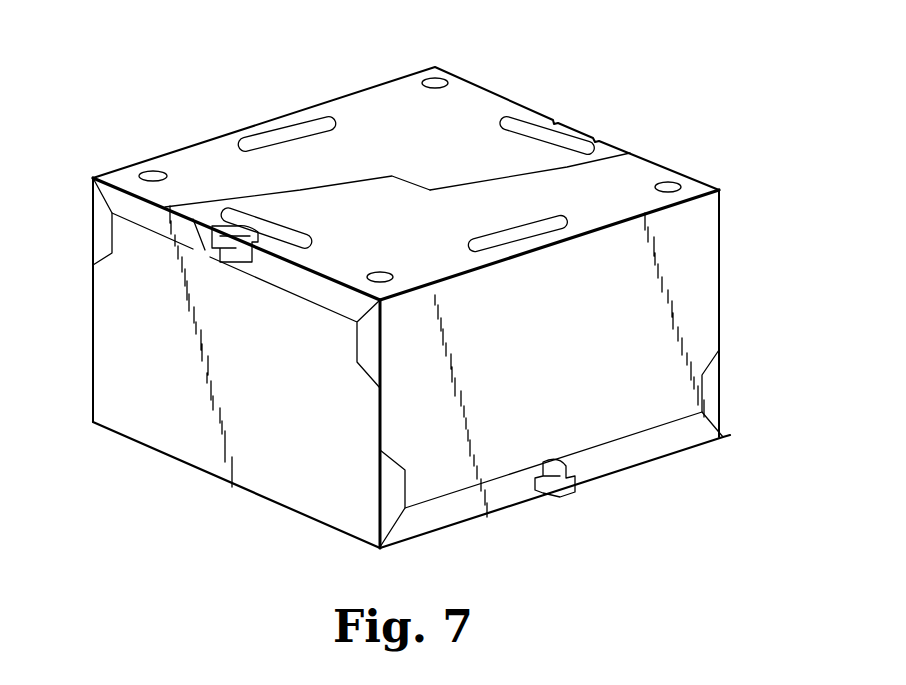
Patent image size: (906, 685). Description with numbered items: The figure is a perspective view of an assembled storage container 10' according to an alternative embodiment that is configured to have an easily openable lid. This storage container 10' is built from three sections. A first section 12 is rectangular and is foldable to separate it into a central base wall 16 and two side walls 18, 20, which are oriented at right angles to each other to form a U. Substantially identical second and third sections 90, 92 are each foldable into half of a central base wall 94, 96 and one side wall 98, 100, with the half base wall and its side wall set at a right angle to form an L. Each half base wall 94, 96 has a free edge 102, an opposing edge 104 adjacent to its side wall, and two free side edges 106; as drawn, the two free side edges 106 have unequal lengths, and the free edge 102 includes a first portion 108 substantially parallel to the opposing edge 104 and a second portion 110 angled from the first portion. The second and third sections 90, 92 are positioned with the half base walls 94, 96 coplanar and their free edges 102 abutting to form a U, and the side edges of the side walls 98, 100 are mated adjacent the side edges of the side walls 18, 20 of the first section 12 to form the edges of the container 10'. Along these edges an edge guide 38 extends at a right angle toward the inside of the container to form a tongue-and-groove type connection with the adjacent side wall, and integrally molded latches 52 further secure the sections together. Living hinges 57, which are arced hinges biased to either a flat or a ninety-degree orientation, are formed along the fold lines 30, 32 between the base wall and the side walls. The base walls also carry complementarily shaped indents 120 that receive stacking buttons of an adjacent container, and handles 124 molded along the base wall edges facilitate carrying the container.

The assembled storage container 10' is at (406, 95).
The first section 12 is at (331, 518).
The central base wall 16 is at (470, 507).
The side wall 18 is at (190, 457).
The side wall 20 is at (713, 380).
The fold line 30 is at (253, 492).
The fold line 32 is at (730, 435).
The edge guide 38 is at (632, 462).
The latch 52 is at (227, 250).
The living hinge 57 is at (497, 263).
The second section 90 is at (724, 228).
The third section 92 is at (177, 148).
The half base wall 94 is at (627, 177).
The half base wall 96 is at (487, 105).
The side wall 98 is at (700, 297).
The side wall 100 is at (95, 223).
The free edge 102 is at (603, 157).
The opposing edge 104 is at (638, 212).
The free side edge 106 is at (323, 275).
The first portion 108 is at (486, 182).
The second portion 110 is at (407, 177).
The indent 120 is at (424, 78).
The handle 124 is at (268, 225).